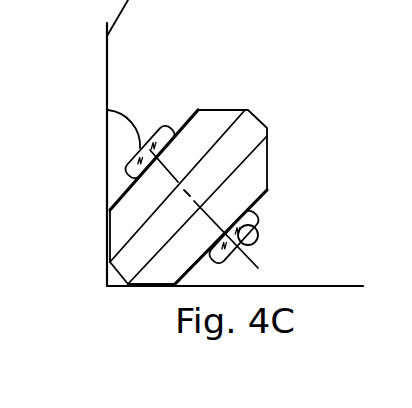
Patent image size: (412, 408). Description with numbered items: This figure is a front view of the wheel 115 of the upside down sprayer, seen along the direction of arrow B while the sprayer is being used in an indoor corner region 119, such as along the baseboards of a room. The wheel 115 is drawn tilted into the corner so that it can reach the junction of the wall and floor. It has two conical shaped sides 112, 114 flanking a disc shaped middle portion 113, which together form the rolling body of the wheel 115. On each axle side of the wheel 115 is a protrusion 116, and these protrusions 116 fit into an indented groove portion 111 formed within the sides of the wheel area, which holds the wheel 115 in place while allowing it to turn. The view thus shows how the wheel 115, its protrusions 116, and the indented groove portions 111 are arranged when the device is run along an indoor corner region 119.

The indented groove portion 111 is at (104, 101).
The conical shaped side 112 is at (208, 125).
The disc shaped middle portion 113 is at (250, 103).
The conical shaped side 114 is at (258, 165).
The wheel 115 is at (271, 122).
The protrusions 116 is at (160, 128).
The indoor corner region 119 is at (320, 284).